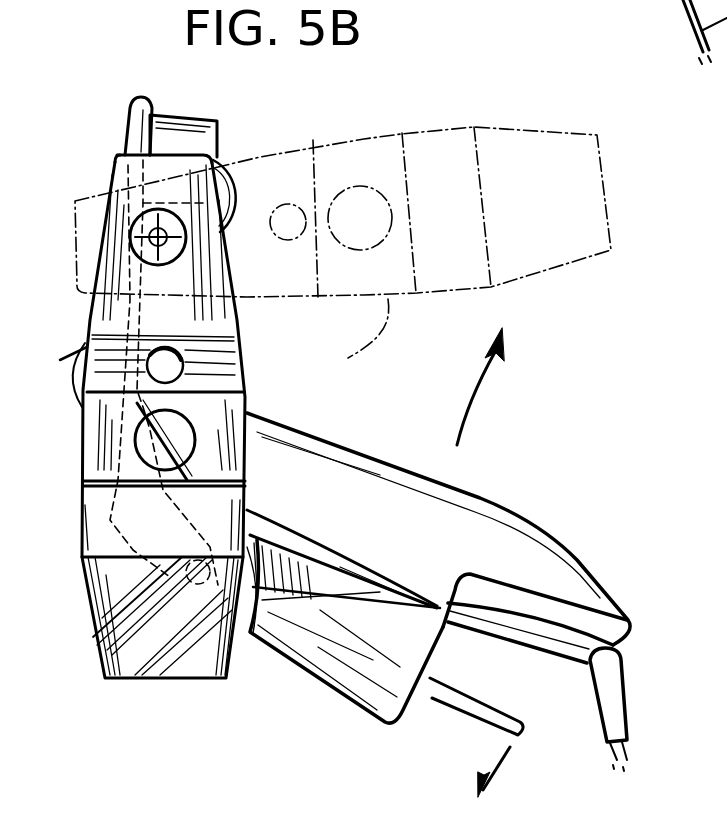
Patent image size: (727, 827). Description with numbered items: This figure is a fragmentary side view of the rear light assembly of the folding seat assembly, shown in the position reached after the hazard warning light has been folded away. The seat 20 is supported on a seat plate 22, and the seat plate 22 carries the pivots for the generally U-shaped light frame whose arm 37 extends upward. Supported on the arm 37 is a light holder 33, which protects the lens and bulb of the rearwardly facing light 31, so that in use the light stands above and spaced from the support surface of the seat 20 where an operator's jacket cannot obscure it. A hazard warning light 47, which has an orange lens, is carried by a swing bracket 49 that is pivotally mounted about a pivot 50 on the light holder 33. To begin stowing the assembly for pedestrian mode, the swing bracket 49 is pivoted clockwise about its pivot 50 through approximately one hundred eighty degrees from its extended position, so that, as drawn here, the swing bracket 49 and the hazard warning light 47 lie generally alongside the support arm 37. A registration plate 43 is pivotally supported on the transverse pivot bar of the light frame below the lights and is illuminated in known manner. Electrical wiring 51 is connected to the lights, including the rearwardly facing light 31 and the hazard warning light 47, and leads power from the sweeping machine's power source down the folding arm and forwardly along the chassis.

The seat 20 is at (497, 503).
The seat plate 22 is at (523, 638).
The rearwardly facing light 31 is at (128, 124).
The light holder 33 is at (215, 126).
The arm 37 is at (157, 443).
The registration plate 43 is at (474, 720).
The hazard warning light 47 is at (140, 642).
The swing bracket 49 is at (244, 376).
The pivot 50 is at (186, 252).
The electrical wiring 51 is at (665, 32).